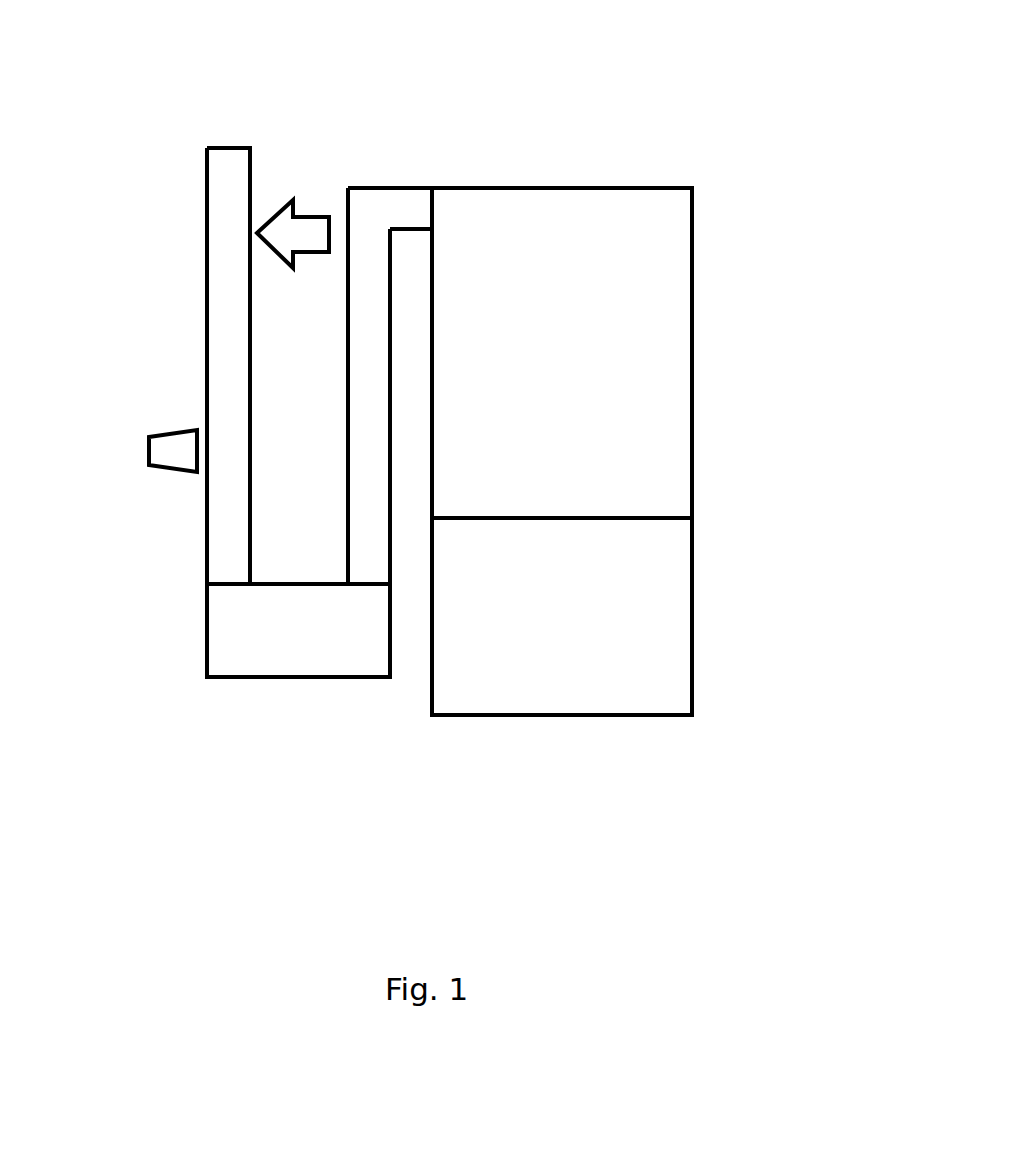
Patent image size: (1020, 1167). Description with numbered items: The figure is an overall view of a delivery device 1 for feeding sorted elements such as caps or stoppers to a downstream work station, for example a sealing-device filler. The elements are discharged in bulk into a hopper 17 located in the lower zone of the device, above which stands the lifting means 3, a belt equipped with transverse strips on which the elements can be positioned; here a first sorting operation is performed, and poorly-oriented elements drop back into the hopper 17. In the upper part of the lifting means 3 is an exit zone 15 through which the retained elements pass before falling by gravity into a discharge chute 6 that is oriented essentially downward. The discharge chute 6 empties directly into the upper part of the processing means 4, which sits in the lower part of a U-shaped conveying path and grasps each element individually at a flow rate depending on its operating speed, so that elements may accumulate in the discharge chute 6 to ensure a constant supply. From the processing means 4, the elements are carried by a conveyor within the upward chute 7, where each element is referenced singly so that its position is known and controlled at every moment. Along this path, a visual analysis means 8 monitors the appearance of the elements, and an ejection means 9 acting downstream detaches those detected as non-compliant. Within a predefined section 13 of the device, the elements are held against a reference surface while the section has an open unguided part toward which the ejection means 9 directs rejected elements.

The delivery device 1 is at (749, 112).
The lifting means 3 is at (630, 375).
The processing means 4 is at (240, 647).
The discharge chute 6 is at (363, 347).
The upward chute 7 is at (223, 305).
The visual analysis means 8 is at (138, 452).
The ejection means 9 is at (308, 238).
The predefined section 13 is at (188, 213).
The exit zone 15 is at (442, 178).
The hopper 17 is at (655, 625).